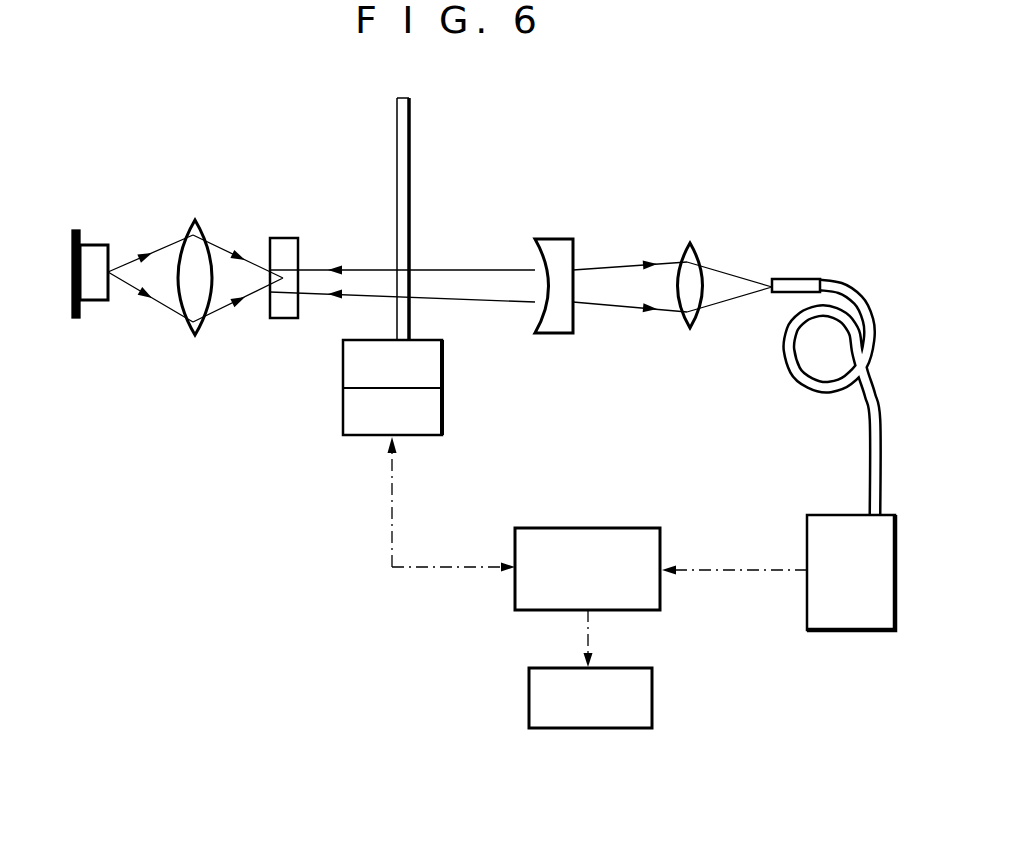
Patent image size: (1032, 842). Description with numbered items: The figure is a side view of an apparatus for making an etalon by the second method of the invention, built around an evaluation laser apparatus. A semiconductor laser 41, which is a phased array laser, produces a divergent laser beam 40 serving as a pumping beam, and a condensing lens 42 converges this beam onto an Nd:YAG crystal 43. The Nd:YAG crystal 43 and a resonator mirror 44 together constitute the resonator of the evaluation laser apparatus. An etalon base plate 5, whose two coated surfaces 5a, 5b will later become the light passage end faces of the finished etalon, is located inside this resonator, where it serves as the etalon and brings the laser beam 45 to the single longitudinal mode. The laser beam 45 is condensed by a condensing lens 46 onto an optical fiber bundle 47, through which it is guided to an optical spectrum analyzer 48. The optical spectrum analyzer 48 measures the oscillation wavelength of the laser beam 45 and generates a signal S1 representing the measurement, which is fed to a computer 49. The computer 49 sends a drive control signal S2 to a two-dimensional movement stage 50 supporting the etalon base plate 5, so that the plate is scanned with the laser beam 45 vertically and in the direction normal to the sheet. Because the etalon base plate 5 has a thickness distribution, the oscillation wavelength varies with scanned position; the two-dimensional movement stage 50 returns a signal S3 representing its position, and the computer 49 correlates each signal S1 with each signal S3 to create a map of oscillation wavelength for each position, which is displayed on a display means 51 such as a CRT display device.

The etalon base plate 5 is at (406, 202).
The surface of the etalon base plate 5a is at (397, 140).
The surface of the etalon base plate 5b is at (410, 153).
The laser beam 40 is at (163, 245).
The semiconductor laser 41 is at (98, 245).
The condensing lens 42 is at (200, 225).
The Nd:YAG crystal 43 is at (290, 238).
The resonator mirror 44 is at (558, 239).
The laser beam 45 is at (473, 270).
The condensing lens 46 is at (695, 248).
The optical fiber bundle 47 is at (813, 280).
The optical spectrum analyzer 48 is at (811, 514).
The computer 49 is at (593, 535).
The two-dimensional movement stage 50 is at (432, 408).
The display means 51 is at (529, 695).
The signal S1 is at (712, 573).
The drive control signal S2 is at (402, 474).
The signal S3 is at (481, 577).